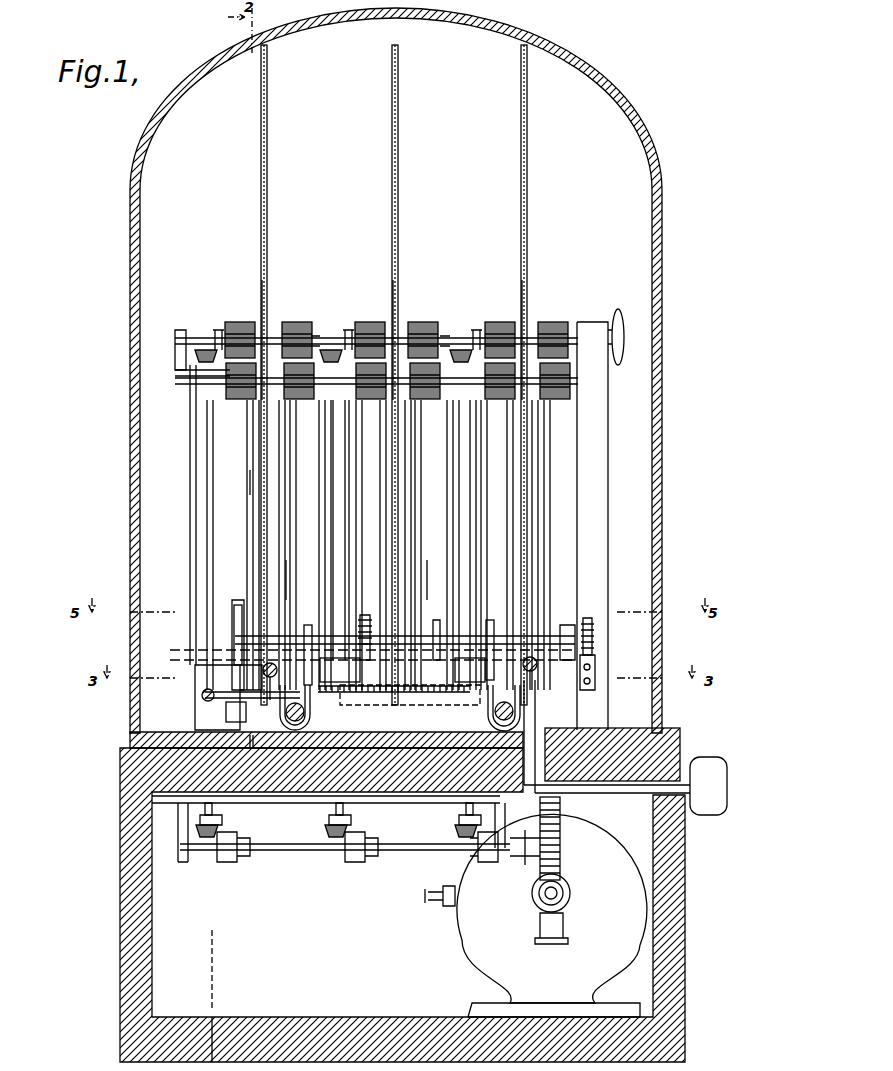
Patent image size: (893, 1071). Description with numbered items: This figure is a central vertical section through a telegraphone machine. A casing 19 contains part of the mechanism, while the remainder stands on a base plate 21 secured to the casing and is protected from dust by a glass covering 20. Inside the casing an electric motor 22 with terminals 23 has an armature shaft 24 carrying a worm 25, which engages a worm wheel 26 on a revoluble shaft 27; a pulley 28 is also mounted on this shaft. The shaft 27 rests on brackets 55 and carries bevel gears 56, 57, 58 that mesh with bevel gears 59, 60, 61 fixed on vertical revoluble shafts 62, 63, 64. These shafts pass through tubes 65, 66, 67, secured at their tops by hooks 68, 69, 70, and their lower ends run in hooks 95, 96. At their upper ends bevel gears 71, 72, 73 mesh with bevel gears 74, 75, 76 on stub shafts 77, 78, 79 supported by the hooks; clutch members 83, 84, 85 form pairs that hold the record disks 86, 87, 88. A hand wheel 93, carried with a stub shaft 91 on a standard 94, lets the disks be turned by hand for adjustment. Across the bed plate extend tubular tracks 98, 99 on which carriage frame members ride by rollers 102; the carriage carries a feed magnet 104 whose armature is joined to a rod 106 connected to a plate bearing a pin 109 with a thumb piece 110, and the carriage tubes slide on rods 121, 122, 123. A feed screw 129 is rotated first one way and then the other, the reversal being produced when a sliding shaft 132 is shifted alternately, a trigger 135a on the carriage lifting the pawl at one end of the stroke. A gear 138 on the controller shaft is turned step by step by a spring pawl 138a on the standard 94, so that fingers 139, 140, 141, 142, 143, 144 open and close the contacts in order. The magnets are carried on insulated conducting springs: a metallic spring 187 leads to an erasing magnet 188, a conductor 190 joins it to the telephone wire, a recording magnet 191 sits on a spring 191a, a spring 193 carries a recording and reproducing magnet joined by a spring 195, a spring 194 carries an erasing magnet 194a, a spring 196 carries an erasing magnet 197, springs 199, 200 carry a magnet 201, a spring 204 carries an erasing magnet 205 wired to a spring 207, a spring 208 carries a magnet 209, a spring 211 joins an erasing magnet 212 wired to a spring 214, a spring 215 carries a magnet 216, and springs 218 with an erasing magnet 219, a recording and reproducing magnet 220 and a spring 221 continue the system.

The casing 19 is at (670, 888).
The glass covering 20 is at (652, 190).
The base plate 21 is at (135, 733).
The electric motor 22 is at (498, 957).
The terminals 23 is at (440, 905).
The armature shaft 24 is at (538, 910).
The worm 25 is at (570, 890).
The worm wheel 26 is at (560, 860).
The revoluble shaft 27 is at (303, 850).
The pulley 28 is at (525, 865).
The brackets 55 is at (178, 832).
The bevel gear 56 is at (230, 862).
The bevel gear 57 is at (355, 862).
The bevel gear 58 is at (478, 850).
The bevel gear 59 is at (225, 833).
The bevel gear 60 is at (325, 830).
The bevel gear 61 is at (455, 830).
The vertical revoluble shaft 62 is at (213, 810).
The vertical revoluble shaft 63 is at (344, 810).
The vertical revoluble shaft 64 is at (465, 806).
The tube 65 is at (190, 500).
The tube 66 is at (326, 490).
The tube 67 is at (455, 488).
The hook 68 is at (178, 374).
The hook 69 is at (340, 400).
The hook 70 is at (472, 400).
The bevel gear 71 is at (195, 356).
The bevel gear 72 is at (335, 350).
The bevel gear 73 is at (458, 350).
The bevel gear 74 is at (218, 330).
The bevel gear 75 is at (350, 330).
The bevel gear 76 is at (478, 330).
The stub shaft 77 is at (181, 330).
The stub shaft 78 is at (316, 336).
The stub shaft 79 is at (448, 340).
The clutch member 83 is at (268, 298).
The clutch member 84 is at (399, 298).
The clutch member 85 is at (528, 298).
The record disk 86 is at (268, 200).
The record disk 87 is at (398, 200).
The record disk 88 is at (527, 200).
The stub shaft 91 is at (470, 670).
The hand wheel 93 is at (618, 309).
The standard 94 is at (592, 526).
The hook 95 is at (240, 676).
The hook 96 is at (340, 673).
The tubular track 98 is at (311, 716).
The tubular track 99 is at (488, 716).
The rollers 102 is at (535, 705).
The feed magnet 104 is at (430, 706).
The rod 106 is at (240, 690).
The pin 109 is at (625, 793).
The thumb piece 110 is at (704, 762).
The rod 121 is at (276, 662).
The rod 122 is at (378, 693).
The rod 123 is at (536, 670).
The feed screw 129 is at (202, 695).
The sliding shaft 132 is at (226, 714).
The trigger 135a is at (250, 748).
The gear 138 is at (594, 625).
The spring pawl 138a is at (596, 660).
The finger 139 is at (246, 600).
The finger 140 is at (310, 625).
The finger 141 is at (365, 607).
The finger 142 is at (437, 625).
The finger 143 is at (492, 620).
The finger 144 is at (570, 625).
The metallic spring 187 is at (255, 505).
The erasing magnet 188 is at (238, 399).
The conductor 190 is at (258, 460).
The recording magnet 191 is at (243, 330).
The spring 191a is at (257, 483).
The metallic spring 193 is at (293, 545).
The spring 194 is at (292, 568).
The erasing magnet 194a is at (298, 399).
The spring 195 is at (282, 520).
The spring 196 is at (386, 512).
The erasing magnet 197 is at (368, 399).
The spring 199 is at (388, 468).
The spring 200 is at (390, 492).
The recording and reproducing magnet 201 is at (376, 330).
The spring 204 is at (418, 588).
The erasing magnet 205 is at (428, 399).
The spring 207 is at (408, 520).
The spring 208 is at (412, 560).
The recording and reproducing magnet 209 is at (421, 330).
The spring 211 is at (513, 520).
The erasing magnet 212 is at (498, 399).
The spring 214 is at (515, 468).
The spring 215 is at (515, 492).
The recording and reproducing magnet 216 is at (503, 330).
The springs 218 is at (545, 555).
The erasing magnet 219 is at (555, 399).
The recording and reproducing magnet 220 is at (558, 330).
The spring 221 is at (540, 505).